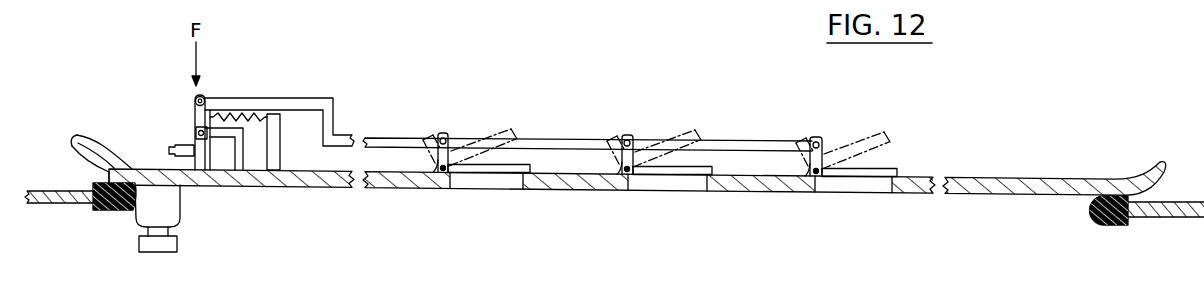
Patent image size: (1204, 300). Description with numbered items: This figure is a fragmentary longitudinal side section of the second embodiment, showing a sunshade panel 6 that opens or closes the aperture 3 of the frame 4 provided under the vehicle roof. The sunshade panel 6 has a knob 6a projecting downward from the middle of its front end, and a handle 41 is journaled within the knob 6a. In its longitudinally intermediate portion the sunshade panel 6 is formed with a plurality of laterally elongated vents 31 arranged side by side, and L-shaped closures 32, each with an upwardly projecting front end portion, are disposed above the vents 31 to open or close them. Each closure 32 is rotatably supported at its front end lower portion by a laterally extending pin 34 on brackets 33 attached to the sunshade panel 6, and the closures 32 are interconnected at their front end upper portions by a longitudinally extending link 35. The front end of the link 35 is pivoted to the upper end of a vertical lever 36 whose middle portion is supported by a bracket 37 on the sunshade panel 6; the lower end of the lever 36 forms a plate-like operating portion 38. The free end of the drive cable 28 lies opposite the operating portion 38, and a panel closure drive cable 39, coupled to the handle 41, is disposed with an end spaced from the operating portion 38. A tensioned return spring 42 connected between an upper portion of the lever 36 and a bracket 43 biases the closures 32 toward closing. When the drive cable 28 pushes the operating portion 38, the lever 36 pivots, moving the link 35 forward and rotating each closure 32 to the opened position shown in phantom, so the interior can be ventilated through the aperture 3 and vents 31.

The aperture 3 is at (1087, 206).
The frame 4 is at (55, 198).
The sunshade panel 6 is at (390, 183).
The knob 6a is at (145, 213).
The drive cable 28 is at (173, 147).
The vents 31 is at (513, 185).
The closures 32 is at (513, 168).
The brackets 33 is at (421, 177).
The pin 34 is at (452, 178).
The link 35 is at (575, 142).
The lever 36 is at (209, 111).
The bracket 37 is at (237, 162).
The operating portion 38 is at (207, 162).
The panel closure drive cable 39 is at (148, 105).
The handle 41 is at (177, 241).
The return spring 42 is at (242, 114).
The bracket 43 is at (273, 137).